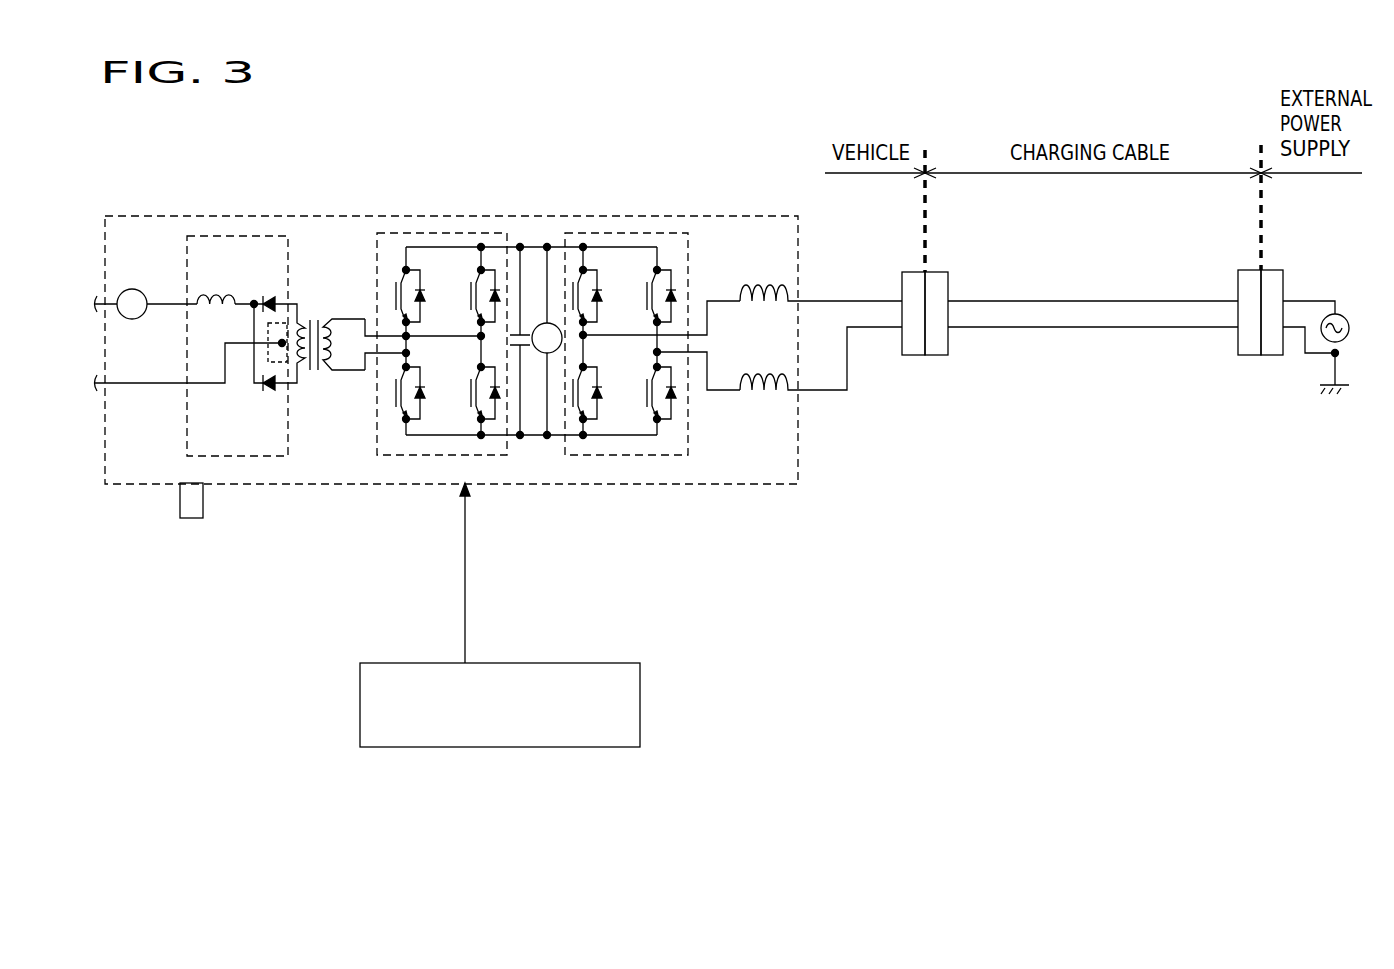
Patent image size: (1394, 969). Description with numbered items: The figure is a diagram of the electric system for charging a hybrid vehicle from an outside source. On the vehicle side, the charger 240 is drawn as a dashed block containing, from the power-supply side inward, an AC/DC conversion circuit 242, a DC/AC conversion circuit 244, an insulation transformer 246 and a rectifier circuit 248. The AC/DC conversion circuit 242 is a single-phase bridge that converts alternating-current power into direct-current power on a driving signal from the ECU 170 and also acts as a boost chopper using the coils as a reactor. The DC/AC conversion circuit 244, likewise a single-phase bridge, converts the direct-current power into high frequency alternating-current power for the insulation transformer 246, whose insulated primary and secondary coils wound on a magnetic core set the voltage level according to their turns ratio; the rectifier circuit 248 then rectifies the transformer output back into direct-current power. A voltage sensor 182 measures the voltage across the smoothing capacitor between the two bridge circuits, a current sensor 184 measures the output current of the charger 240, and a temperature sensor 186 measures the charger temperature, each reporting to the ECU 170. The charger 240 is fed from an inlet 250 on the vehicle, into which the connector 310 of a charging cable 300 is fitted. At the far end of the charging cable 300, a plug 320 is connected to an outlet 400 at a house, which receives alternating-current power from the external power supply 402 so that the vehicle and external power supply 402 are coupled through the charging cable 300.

The ECU 170 is at (600, 747).
The voltage sensor 182 is at (547, 353).
The current sensor 184 is at (132, 289).
The temperature sensor 186 is at (193, 518).
The charger 240 is at (383, 483).
The AC/DC conversion circuit 242 is at (620, 455).
The DC/AC conversion circuit 244 is at (500, 455).
The insulation transformer 246 is at (323, 387).
The rectifier circuit 248 is at (247, 457).
The inlet 250 is at (912, 272).
The charging cable 300 is at (1087, 263).
The connector 310 is at (938, 272).
The plug 320 is at (1252, 270).
The outlet 400 is at (1265, 355).
The external power supply 402 is at (1340, 315).